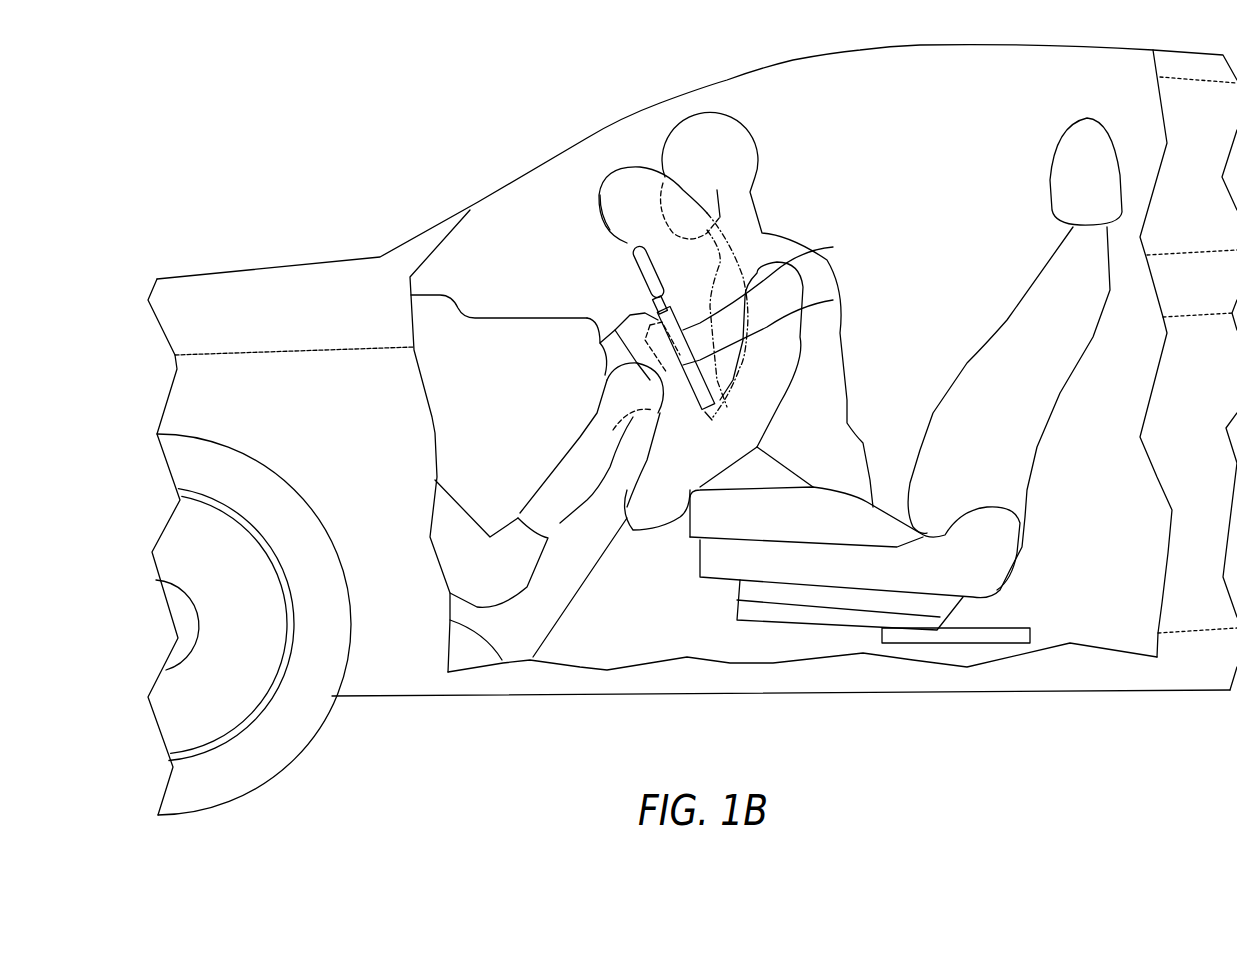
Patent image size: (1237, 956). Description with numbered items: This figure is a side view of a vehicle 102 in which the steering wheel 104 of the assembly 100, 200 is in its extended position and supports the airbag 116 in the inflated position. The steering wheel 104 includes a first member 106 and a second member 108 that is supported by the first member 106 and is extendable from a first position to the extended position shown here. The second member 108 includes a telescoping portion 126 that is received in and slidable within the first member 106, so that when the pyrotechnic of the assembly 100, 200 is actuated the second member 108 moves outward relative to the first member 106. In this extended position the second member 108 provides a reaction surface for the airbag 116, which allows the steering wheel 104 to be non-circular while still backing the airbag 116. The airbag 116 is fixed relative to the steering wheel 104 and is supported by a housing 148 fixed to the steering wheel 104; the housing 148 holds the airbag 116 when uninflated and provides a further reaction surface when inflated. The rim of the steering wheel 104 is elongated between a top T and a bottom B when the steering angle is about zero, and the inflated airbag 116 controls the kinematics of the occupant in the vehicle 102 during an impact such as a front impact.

The vehicle 102 is at (428, 230).
The airbag 116 is at (630, 193).
The top of the steering wheel T is at (612, 208).
The second member 108 is at (633, 267).
The telescoping portion 126 is at (650, 307).
The assembly 100 is at (584, 328).
The assembly 200 is at (584, 328).
The housing 148 is at (650, 333).
The bottom of the steering wheel B is at (713, 420).
The steering wheel 104 is at (833, 247).
The first member 106 is at (833, 300).